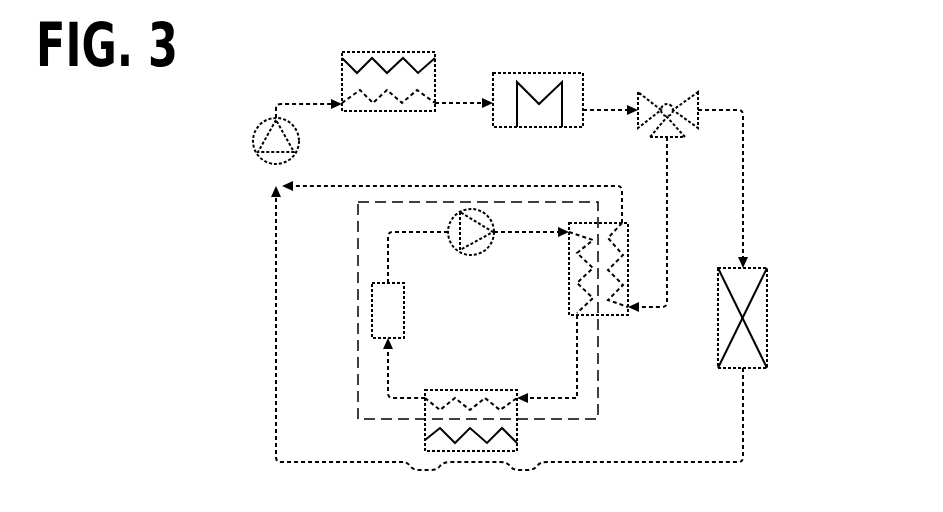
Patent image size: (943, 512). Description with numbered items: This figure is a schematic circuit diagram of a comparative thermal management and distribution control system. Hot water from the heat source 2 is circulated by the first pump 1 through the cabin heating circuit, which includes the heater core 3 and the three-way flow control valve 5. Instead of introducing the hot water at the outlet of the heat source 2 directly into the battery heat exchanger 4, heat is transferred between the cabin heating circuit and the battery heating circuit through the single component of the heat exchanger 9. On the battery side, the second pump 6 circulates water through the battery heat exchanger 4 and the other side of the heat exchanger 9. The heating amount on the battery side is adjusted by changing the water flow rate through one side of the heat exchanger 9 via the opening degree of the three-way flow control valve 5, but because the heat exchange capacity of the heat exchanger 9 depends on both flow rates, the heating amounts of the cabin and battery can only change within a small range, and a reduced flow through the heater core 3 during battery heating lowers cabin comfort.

The first pump 1 is at (252, 138).
The heat source 2 is at (358, 52).
The heater core 3 is at (768, 310).
The battery heat exchanger 4 is at (372, 306).
The three-way flow control valve 5 is at (667, 104).
The second pump 6 is at (480, 253).
The heat exchanger 9 is at (610, 316).